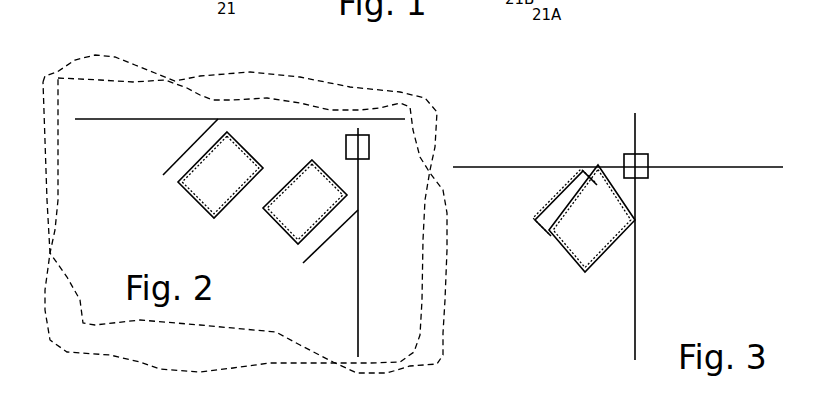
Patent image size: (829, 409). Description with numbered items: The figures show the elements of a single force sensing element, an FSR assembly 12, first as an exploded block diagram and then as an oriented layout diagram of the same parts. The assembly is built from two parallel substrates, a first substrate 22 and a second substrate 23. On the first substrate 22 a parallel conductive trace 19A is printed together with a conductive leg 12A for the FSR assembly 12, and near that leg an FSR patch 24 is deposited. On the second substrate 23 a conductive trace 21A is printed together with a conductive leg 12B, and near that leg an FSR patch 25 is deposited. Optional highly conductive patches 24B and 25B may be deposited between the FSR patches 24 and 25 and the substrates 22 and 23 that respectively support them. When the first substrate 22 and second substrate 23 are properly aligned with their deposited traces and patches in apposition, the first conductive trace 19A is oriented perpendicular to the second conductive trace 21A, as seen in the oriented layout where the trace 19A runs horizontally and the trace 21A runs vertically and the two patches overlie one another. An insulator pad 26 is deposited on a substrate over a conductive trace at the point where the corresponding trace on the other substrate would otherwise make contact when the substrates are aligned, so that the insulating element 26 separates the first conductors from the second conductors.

In FIG. 2, the FSR assembly 12 is at (90, 57).
In FIG. 3, the FSR assembly 12 is at (729, 106).
In FIG. 2, the conductive leg 12A is at (156, 149).
In FIG. 3, the conductive leg 12A is at (500, 225).
In FIG. 2, the conductive leg 12B is at (328, 266).
In FIG. 3, the conductive leg 12B is at (586, 301).
In FIG. 2, the first conductive trace 19A is at (241, 149).
In FIG. 3, the first conductive trace 19A is at (618, 198).
In FIG. 2, the second conductive trace 21A is at (382, 242).
In FIG. 3, the second conductive trace 21A is at (660, 236).
In FIG. 2, the first substrate 22 is at (258, 217).
In FIG. 2, the second substrate 23 is at (240, 227).
In FIG. 2, the FSR patch 24 is at (197, 189).
In FIG. 3, the FSR patch 24 is at (581, 232).
In FIG. 2, the highly conductive patch 24B is at (195, 181).
In FIG. 2, the FSR patch 25 is at (289, 221).
In FIG. 3, the FSR patch 25 is at (547, 222).
In FIG. 2, the highly conductive patch 25B is at (302, 223).
In FIG. 2, the insulator pad 26 is at (327, 147).
In FIG. 3, the insulator pad 26 is at (605, 164).